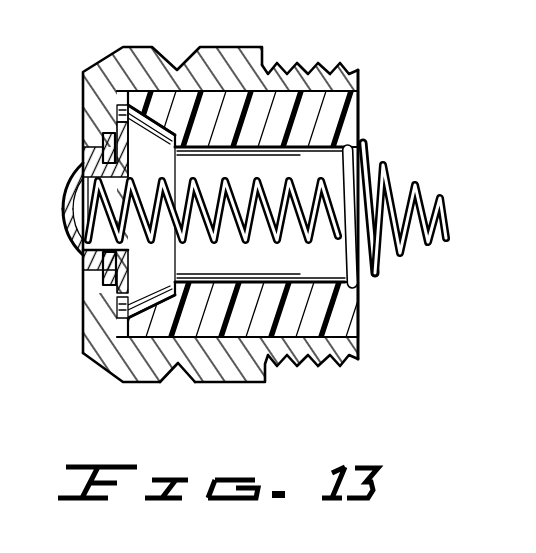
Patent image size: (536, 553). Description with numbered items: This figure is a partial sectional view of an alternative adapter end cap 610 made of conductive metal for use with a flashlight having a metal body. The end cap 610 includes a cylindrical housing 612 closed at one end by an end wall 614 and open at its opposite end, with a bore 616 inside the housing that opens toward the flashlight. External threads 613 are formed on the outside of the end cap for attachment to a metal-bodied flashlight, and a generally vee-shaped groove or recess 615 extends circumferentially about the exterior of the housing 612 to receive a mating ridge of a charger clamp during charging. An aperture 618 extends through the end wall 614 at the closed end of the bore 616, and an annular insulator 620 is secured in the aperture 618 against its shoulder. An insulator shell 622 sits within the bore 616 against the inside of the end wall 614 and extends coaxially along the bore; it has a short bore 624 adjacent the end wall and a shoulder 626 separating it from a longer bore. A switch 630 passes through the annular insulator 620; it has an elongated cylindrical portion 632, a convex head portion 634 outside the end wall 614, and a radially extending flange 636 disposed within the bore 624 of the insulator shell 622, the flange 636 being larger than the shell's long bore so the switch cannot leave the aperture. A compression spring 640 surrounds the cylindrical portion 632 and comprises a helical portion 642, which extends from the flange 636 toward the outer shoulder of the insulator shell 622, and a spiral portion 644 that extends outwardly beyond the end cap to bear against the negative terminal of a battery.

The end cap 610 is at (103, 52).
The cylindrical housing 612 is at (240, 371).
The threads 613 is at (318, 68).
The end wall 614 is at (82, 353).
The groove or recess 615 is at (176, 368).
The bore 616 is at (359, 95).
The aperture 618 is at (85, 272).
The annular insulator 620 is at (100, 152).
The insulator shell 622 is at (356, 331).
The bore 624 is at (160, 305).
The shoulder 626 is at (355, 143).
The switch 630 is at (89, 200).
The cylindrical portion 632 is at (79, 252).
The head portion 634 is at (79, 172).
The flange 636 is at (117, 122).
The compression spring 640 is at (383, 273).
The helical portion 642 is at (231, 164).
The spiral portion 644 is at (386, 171).